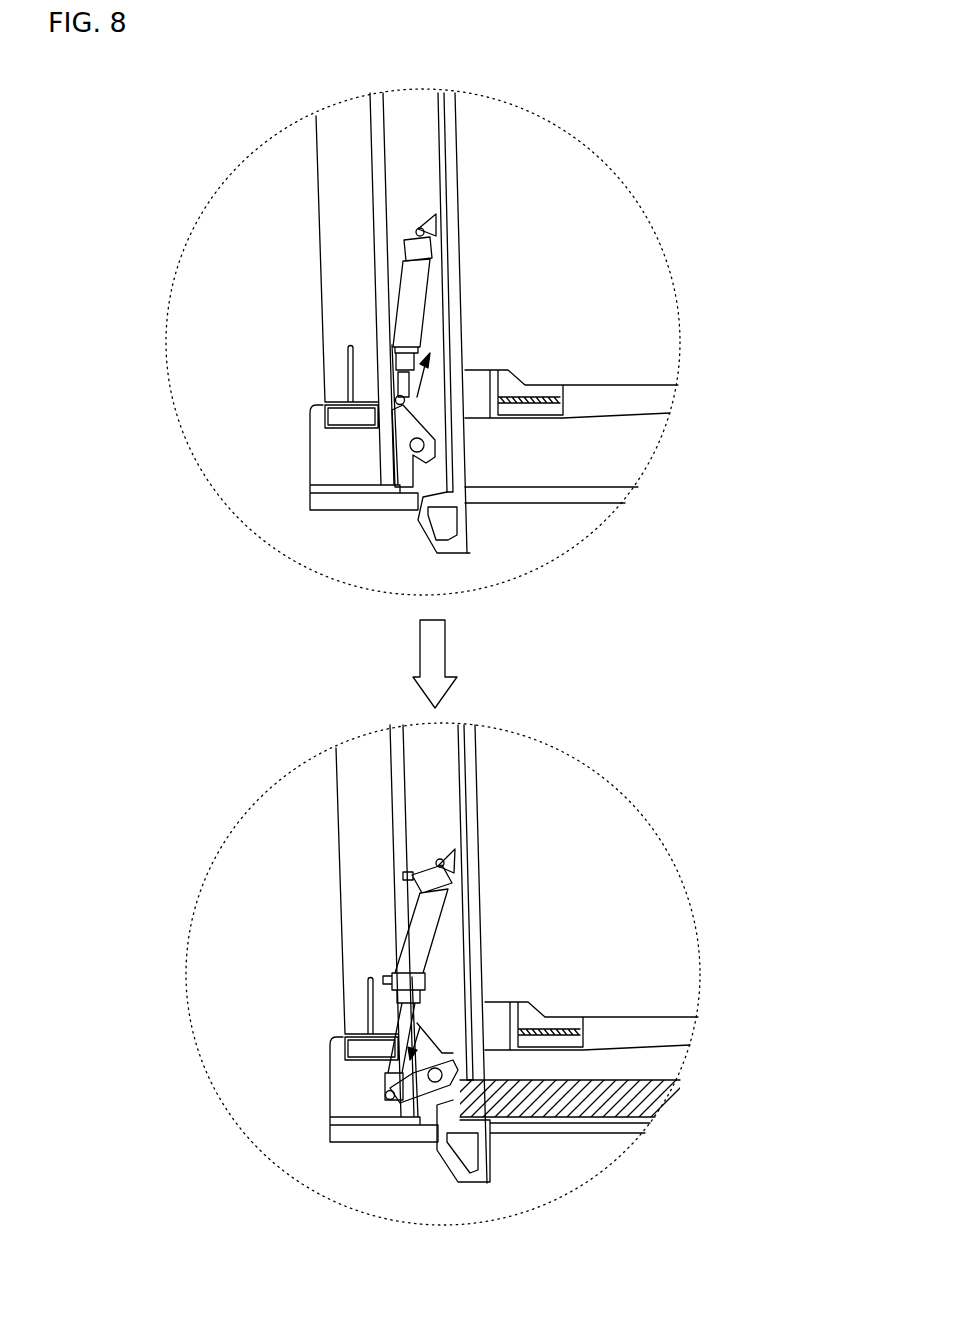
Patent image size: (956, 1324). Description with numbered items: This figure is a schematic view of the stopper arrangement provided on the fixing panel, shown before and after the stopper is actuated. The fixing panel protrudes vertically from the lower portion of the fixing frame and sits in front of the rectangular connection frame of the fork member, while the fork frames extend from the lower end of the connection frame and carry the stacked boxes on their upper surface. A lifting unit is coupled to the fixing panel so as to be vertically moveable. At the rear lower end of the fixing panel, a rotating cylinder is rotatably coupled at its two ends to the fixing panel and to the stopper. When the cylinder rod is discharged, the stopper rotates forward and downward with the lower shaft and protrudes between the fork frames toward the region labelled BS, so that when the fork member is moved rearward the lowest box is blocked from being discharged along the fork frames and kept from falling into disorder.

The base surface BS is at (655, 1098).